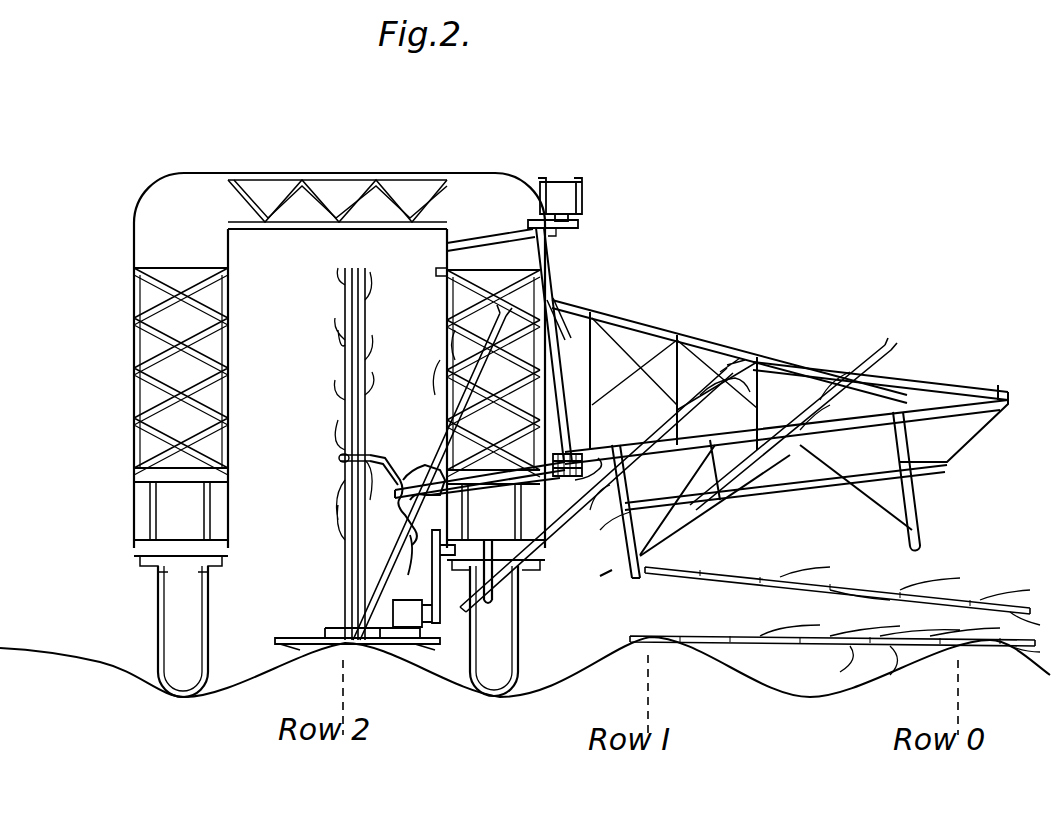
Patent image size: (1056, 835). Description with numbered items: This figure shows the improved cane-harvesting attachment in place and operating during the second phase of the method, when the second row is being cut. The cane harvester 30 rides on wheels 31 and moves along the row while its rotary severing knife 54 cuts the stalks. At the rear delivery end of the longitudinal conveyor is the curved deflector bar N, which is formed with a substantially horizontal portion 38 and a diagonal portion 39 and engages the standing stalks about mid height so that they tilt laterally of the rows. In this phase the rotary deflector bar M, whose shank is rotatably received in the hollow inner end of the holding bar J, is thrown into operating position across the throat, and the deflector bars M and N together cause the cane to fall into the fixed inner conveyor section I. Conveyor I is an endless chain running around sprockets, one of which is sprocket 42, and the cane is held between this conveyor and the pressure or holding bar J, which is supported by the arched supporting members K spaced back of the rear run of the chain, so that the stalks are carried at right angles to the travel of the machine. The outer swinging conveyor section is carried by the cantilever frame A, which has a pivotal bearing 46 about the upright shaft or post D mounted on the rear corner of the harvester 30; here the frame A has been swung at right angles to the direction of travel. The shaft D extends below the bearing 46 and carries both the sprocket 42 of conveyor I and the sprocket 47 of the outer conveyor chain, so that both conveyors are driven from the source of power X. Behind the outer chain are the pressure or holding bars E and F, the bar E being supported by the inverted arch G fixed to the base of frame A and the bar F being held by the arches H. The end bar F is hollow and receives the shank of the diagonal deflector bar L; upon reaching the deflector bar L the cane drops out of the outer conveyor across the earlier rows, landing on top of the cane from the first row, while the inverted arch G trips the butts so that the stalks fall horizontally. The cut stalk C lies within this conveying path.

The cane harvester 30 is at (150, 226).
The wheels 31 is at (172, 612).
The horizontal portion 38 is at (345, 457).
The diagonal portion 39 is at (398, 462).
The sprocket 42 is at (582, 480).
The pivotal bearing 46 is at (556, 322).
The sprocket 47 is at (584, 460).
The rotary severing knife 54 is at (306, 638).
The cantilever frame A is at (733, 345).
The cut stalk C is at (594, 517).
The upright shaft or post D is at (550, 250).
The pressure or holding bar E is at (664, 446).
The pressure or holding bar F is at (866, 424).
The arch G is at (636, 575).
The arches H is at (920, 540).
The fixed inner conveyor section I is at (545, 482).
The pressure or holding bar J is at (431, 465).
The arched supporting member K is at (510, 604).
The diagonal deflector bar L is at (764, 364).
The rotary deflector bar M is at (423, 578).
The deflector bar N is at (340, 462).
The source of power X is at (575, 206).